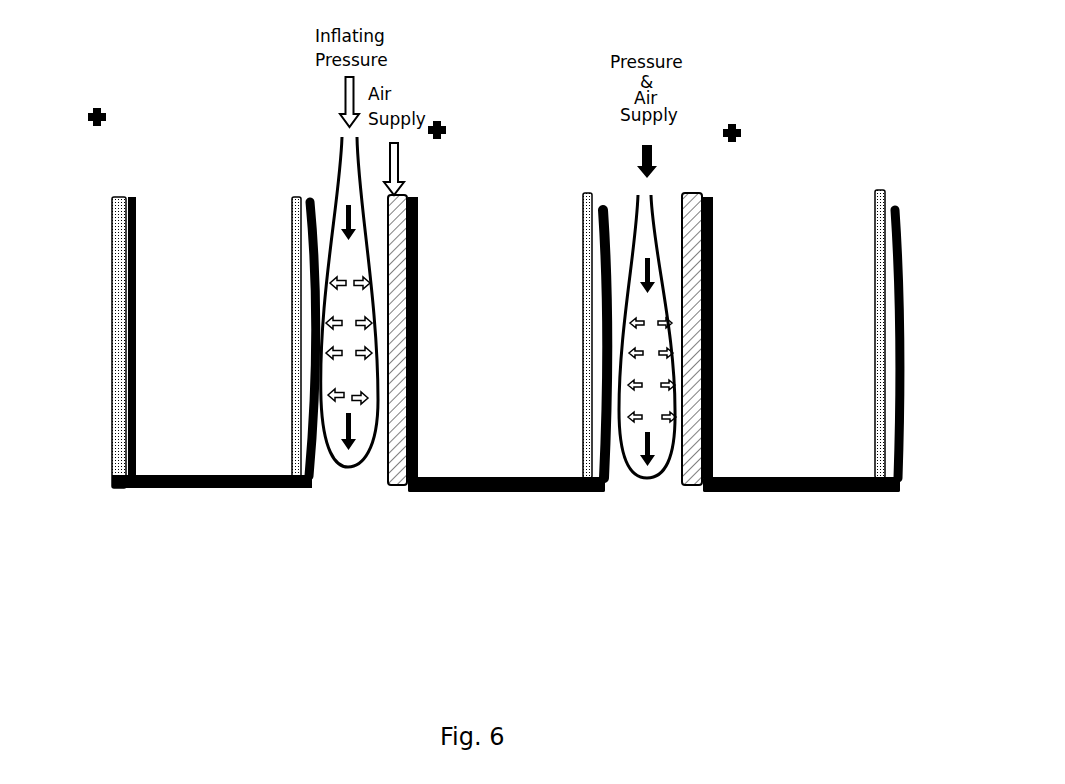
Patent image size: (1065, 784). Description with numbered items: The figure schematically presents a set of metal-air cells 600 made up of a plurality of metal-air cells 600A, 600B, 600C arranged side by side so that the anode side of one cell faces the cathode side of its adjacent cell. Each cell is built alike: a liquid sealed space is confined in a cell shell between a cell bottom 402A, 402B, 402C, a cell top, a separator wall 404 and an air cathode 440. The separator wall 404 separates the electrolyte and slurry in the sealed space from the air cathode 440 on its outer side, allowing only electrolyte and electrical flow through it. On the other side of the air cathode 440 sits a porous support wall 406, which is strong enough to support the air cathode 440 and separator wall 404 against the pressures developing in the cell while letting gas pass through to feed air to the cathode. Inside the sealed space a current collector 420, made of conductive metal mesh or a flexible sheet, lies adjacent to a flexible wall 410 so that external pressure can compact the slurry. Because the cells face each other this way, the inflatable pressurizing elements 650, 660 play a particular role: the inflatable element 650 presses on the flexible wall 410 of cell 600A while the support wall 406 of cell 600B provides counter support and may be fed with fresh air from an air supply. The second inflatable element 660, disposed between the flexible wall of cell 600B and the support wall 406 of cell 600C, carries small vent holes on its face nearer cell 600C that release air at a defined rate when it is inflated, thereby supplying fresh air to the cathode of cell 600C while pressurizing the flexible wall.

The set of metal-air cells 600 is at (648, 625).
The metal-air cell 600A is at (187, 594).
The metal-air cell 600B is at (497, 595).
The metal-air cell 600C is at (795, 572).
The cell bottom 402A is at (207, 494).
The cell bottom 402B is at (514, 496).
The cell bottom 402C is at (800, 496).
The separator wall 404 is at (137, 197).
The porous support wall 406 is at (115, 250).
The flexible wall 410 is at (308, 200).
The current collector 420 is at (295, 196).
The air cathode 440 is at (133, 197).
The inflatable pressurizing element 650 is at (345, 482).
The second inflatable pressurizing element 660 is at (640, 485).